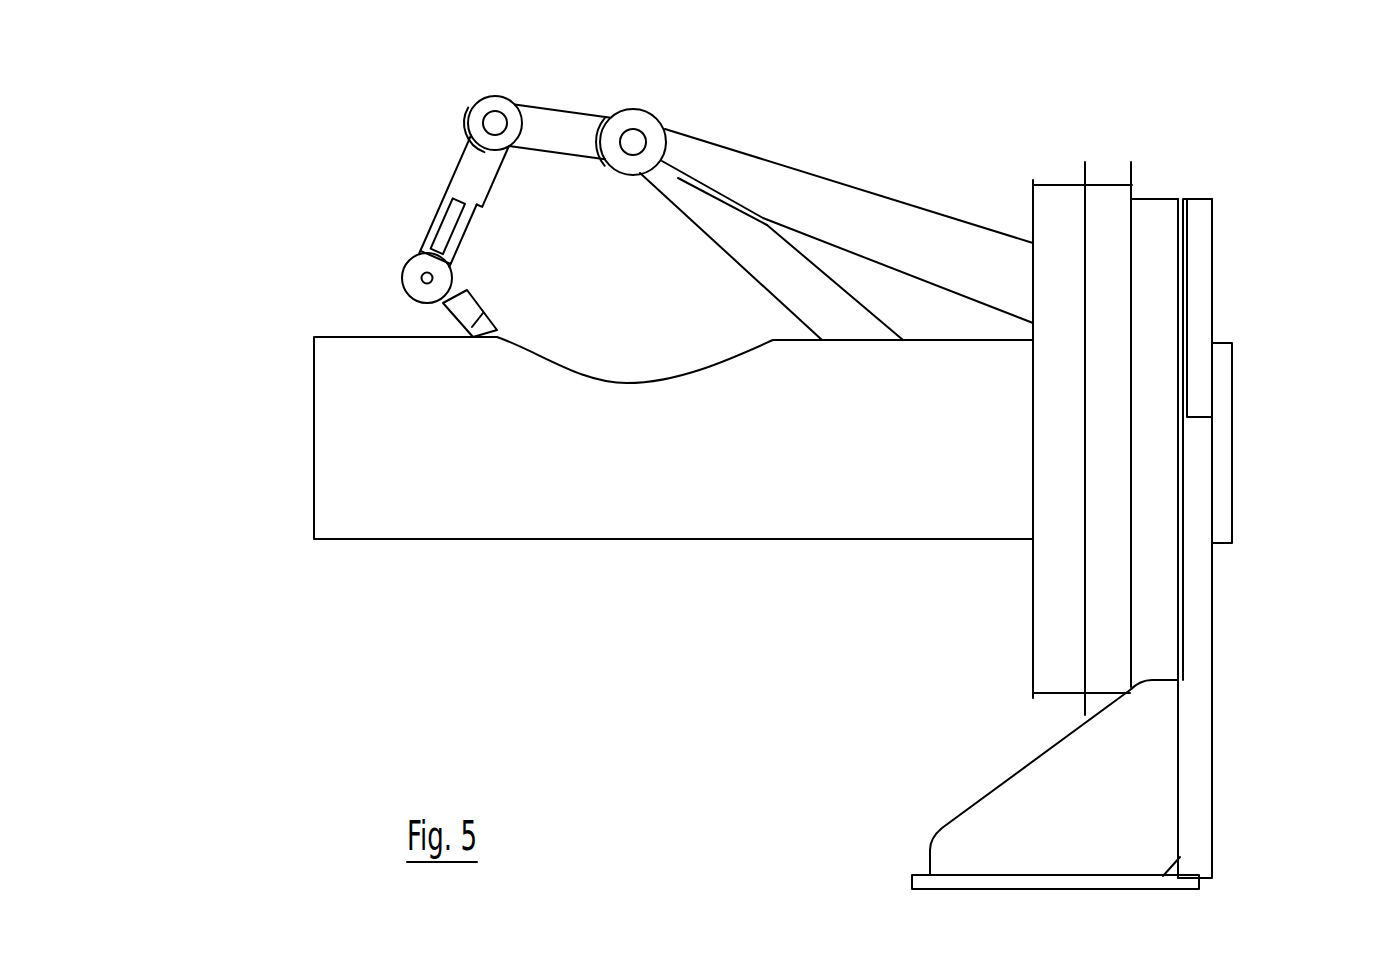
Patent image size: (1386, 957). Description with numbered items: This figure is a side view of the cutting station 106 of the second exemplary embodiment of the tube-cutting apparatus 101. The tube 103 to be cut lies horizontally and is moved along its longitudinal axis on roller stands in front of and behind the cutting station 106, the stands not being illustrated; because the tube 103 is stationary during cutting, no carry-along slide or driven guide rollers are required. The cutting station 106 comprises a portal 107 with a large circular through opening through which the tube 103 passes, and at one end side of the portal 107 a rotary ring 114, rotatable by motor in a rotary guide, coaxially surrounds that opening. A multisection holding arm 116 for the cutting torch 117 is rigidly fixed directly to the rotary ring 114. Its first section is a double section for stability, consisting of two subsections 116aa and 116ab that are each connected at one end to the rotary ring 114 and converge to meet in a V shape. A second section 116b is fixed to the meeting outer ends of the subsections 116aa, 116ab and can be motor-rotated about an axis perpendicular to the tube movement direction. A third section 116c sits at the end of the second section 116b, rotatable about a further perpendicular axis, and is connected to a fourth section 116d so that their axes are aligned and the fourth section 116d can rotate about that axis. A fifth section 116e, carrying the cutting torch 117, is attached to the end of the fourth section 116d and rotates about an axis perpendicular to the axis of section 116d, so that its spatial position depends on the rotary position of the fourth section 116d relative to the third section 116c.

The apparatus 101 is at (238, 181).
The tube 103 is at (522, 497).
The cutting station 106 is at (844, 666).
The portal 107 is at (1195, 753).
The rotary ring 114 is at (1065, 227).
The holding arm 116 is at (826, 190).
The subsection 116aa is at (798, 197).
The subsection 116ab is at (782, 265).
The second section 116b is at (562, 133).
The third section 116c is at (475, 177).
The fourth section 116d is at (437, 220).
The fifth section 116e is at (450, 292).
The cutting torch 117 is at (473, 305).